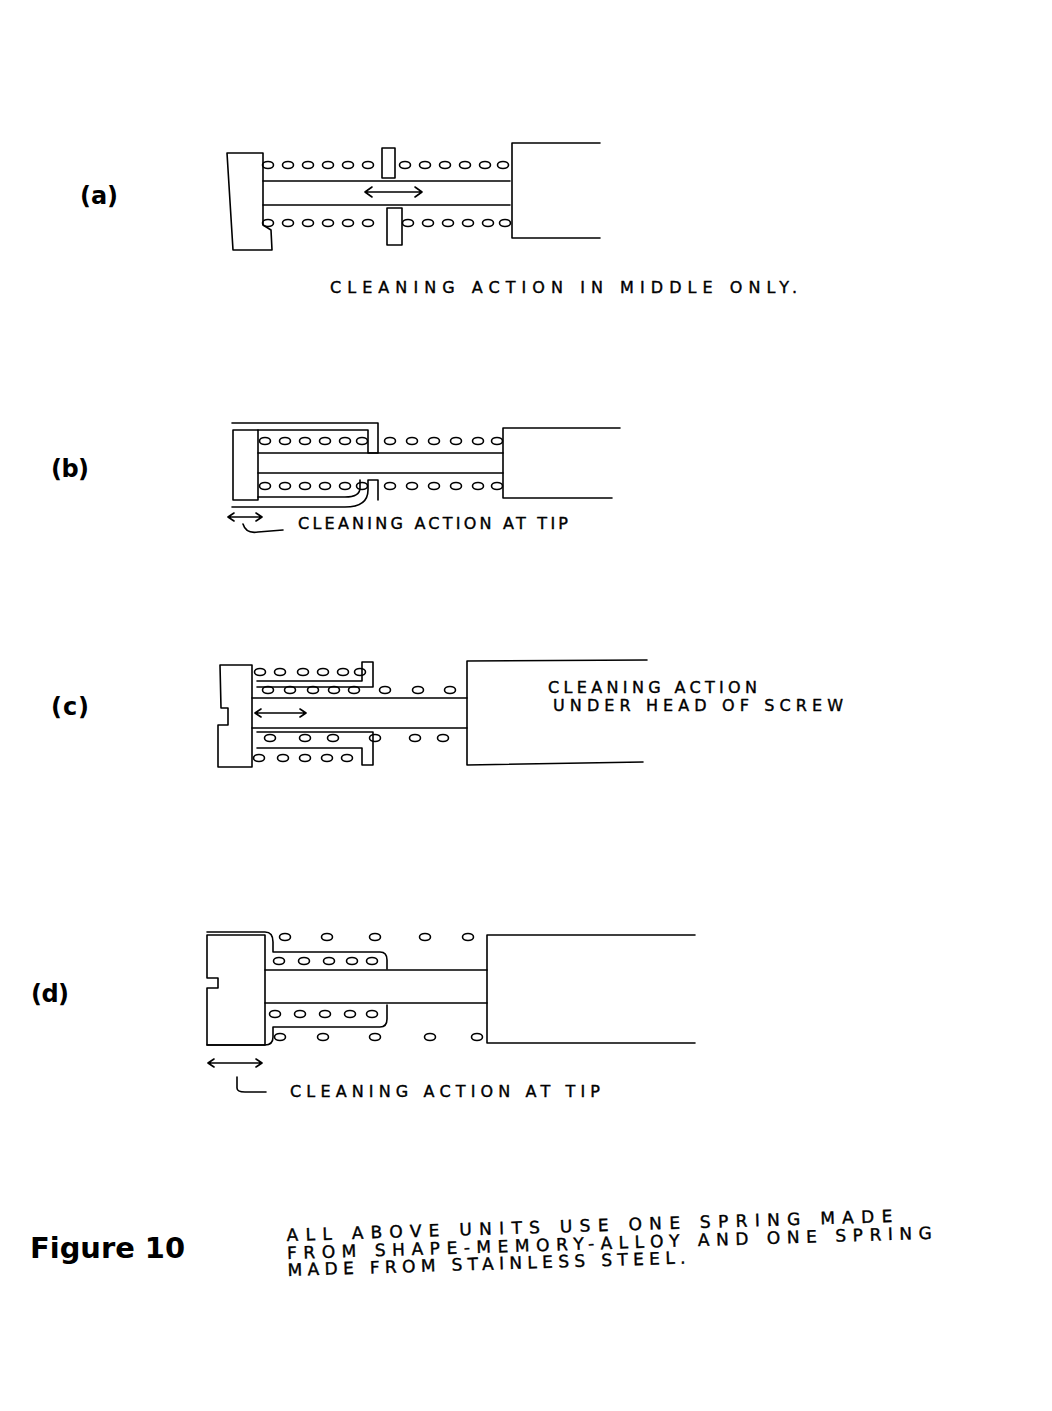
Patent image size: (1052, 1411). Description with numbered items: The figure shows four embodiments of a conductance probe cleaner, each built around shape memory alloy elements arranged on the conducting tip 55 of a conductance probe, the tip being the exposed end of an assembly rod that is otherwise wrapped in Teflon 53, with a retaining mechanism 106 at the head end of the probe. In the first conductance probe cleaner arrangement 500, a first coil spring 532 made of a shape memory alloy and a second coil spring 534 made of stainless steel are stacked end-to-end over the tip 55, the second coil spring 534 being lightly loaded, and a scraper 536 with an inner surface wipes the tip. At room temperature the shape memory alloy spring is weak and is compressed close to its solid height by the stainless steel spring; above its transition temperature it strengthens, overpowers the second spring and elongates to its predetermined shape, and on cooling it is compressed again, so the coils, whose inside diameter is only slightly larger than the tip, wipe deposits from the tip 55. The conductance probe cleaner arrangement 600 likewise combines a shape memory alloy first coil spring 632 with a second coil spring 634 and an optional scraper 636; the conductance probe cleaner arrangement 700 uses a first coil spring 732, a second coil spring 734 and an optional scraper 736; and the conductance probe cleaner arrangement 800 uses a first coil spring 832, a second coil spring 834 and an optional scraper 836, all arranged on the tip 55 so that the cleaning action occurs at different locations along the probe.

The conductance probe cleaner arrangement 500 is at (209, 127).
The conductance probe cleaner arrangement 600 is at (207, 387).
The conductance probe cleaner arrangement 700 is at (184, 633).
The conductance probe cleaner arrangement 800 is at (176, 888).
The retaining mechanism 106 is at (240, 168).
The conducting tip 55 is at (283, 195).
The Teflon 53 is at (570, 158).
The first coil spring 532 is at (328, 140).
The second coil spring 534 is at (470, 127).
The scraper 536 is at (387, 150).
The first coil spring 632 is at (327, 437).
The second coil spring 634 is at (482, 427).
The scraper 636 is at (378, 426).
The first coil spring 732 is at (318, 659).
The second coil spring 734 is at (405, 677).
The scraper 736 is at (364, 662).
The first coil spring 832 is at (346, 1028).
The second coil spring 834 is at (427, 930).
The scraper 836 is at (345, 950).